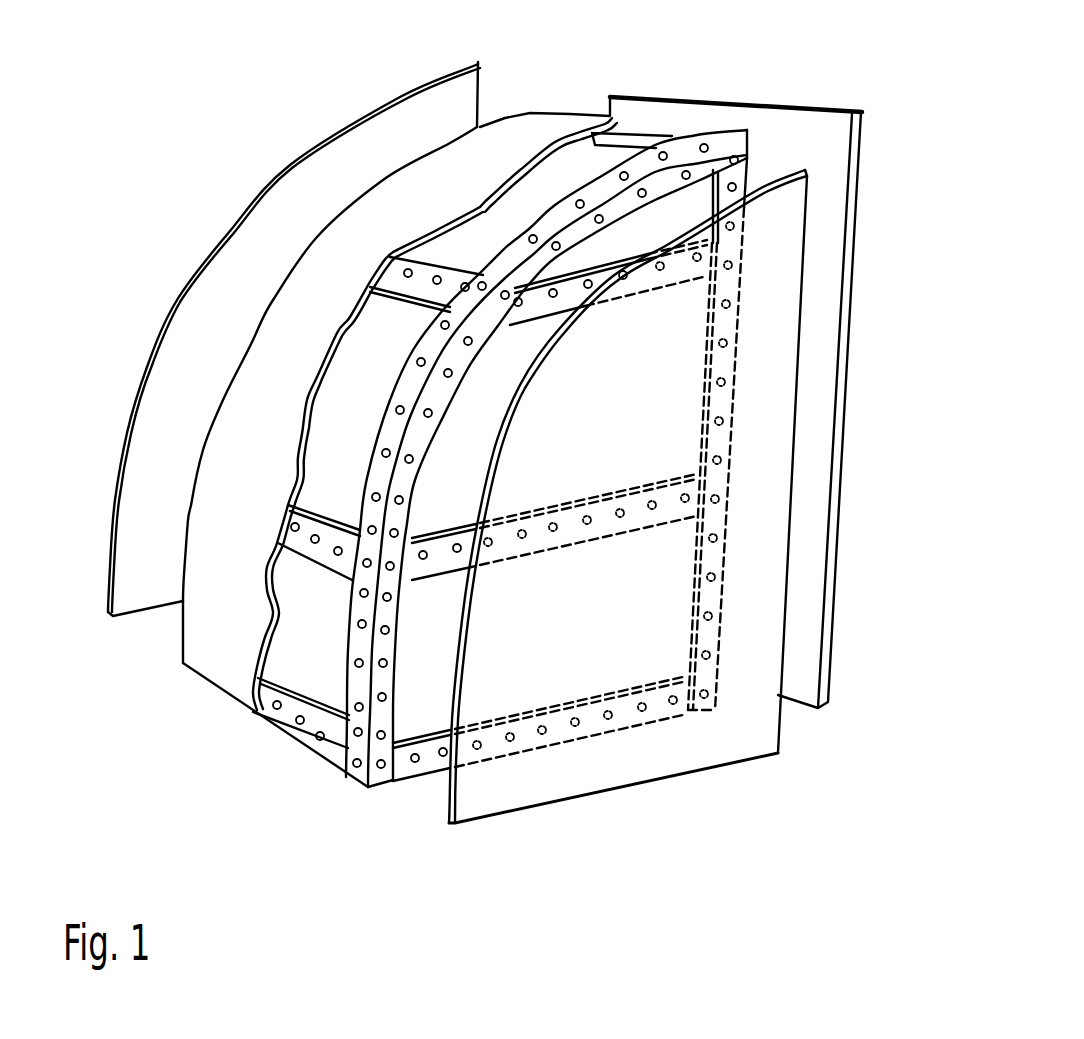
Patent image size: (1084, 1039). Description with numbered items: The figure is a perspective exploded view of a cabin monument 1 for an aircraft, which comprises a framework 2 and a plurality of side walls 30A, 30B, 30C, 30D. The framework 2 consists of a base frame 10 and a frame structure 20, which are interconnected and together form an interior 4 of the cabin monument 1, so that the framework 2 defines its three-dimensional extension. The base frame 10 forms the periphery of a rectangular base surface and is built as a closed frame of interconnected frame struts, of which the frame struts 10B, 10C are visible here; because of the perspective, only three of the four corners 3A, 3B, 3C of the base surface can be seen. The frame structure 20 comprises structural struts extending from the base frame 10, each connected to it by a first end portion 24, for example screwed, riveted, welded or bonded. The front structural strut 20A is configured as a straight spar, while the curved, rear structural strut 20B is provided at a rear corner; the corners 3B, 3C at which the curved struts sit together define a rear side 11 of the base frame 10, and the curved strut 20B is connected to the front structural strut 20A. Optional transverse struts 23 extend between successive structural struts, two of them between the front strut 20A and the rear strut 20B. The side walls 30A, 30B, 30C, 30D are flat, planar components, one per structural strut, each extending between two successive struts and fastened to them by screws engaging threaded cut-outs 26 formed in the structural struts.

The cabin monument 1 is at (172, 98).
The framework 2 is at (311, 761).
The corner 3A is at (734, 714).
The corner 3B is at (371, 800).
The corner 3C is at (169, 676).
The interior 4 is at (413, 626).
The base frame 10 is at (470, 544).
The frame strut 10B is at (435, 762).
The frame strut 10C is at (288, 710).
The rear side 11 is at (200, 754).
The frame structure 20 is at (626, 414).
The structural strut 20A is at (716, 553).
The curved, rear structural strut 20B is at (440, 447).
The transverse strut 23 is at (650, 130).
The first end portion 24 is at (378, 748).
The threaded cut-out 26 is at (575, 198).
The side wall 30A is at (852, 158).
The side wall 30B is at (677, 757).
The side wall 30C is at (542, 125).
The side wall 30D is at (282, 208).